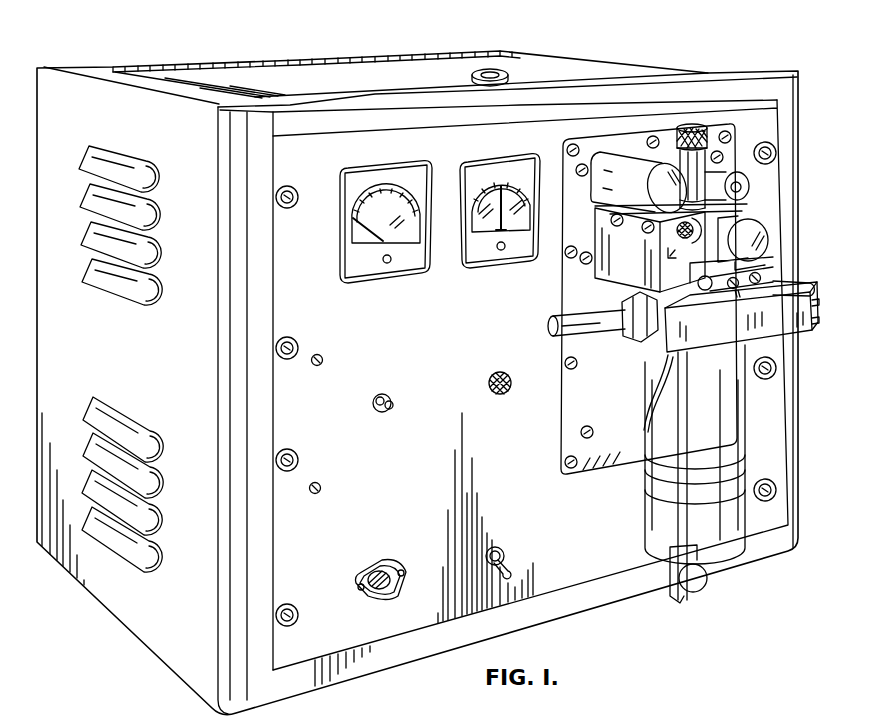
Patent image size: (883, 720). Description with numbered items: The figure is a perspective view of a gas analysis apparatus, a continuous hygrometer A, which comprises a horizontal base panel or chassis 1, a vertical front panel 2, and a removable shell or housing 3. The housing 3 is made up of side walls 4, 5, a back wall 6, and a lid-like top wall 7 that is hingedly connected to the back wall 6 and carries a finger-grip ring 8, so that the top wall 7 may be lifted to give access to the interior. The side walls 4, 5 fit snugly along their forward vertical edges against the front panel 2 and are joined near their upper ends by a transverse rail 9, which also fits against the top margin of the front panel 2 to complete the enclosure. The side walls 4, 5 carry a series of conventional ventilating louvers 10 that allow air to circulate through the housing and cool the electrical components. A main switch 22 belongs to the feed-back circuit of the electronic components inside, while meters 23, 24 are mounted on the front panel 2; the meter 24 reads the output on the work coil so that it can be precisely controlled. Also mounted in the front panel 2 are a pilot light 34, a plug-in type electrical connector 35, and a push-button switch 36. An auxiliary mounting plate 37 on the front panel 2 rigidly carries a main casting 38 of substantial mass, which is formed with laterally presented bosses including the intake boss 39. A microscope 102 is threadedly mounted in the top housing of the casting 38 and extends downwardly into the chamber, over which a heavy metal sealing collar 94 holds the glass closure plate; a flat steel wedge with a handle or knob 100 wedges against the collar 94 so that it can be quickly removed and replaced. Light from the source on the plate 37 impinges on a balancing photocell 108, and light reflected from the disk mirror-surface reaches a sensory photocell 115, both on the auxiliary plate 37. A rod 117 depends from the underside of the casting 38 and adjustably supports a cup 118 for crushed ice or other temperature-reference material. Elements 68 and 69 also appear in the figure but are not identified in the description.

The base panel or chassis 1 is at (439, 650).
The front panel 2 is at (583, 578).
The shell or housing 3 is at (51, 68).
The side wall 4 is at (108, 612).
The side wall 5 is at (723, 69).
The back wall 6 is at (106, 66).
The top wall 7 is at (554, 66).
The finger-grip ring 8 is at (490, 68).
The transverse rail 9 is at (329, 122).
The ventilating louvers 10 is at (81, 221).
The main switch 22 is at (384, 394).
The meter 23 is at (381, 279).
The meter 24 is at (493, 268).
The pilot light 34 is at (512, 364).
The electrical connector 35 is at (378, 566).
The push-button switch 36 is at (500, 548).
The auxiliary mounting plate 37 is at (565, 410).
The main casting 38 is at (612, 293).
The intake boss 39 is at (643, 339).
The rod 68 is at (549, 327).
The terminal end 69 is at (808, 281).
The sealing collar 94 is at (697, 312).
The handle or knob 100 is at (708, 292).
The microscope 102 is at (707, 156).
The balancing photocell 108 is at (670, 184).
The sensory photocell 115 is at (751, 224).
The rod 117 is at (686, 398).
The cup 118 is at (648, 508).
The continuous hygrometer A is at (164, 664).